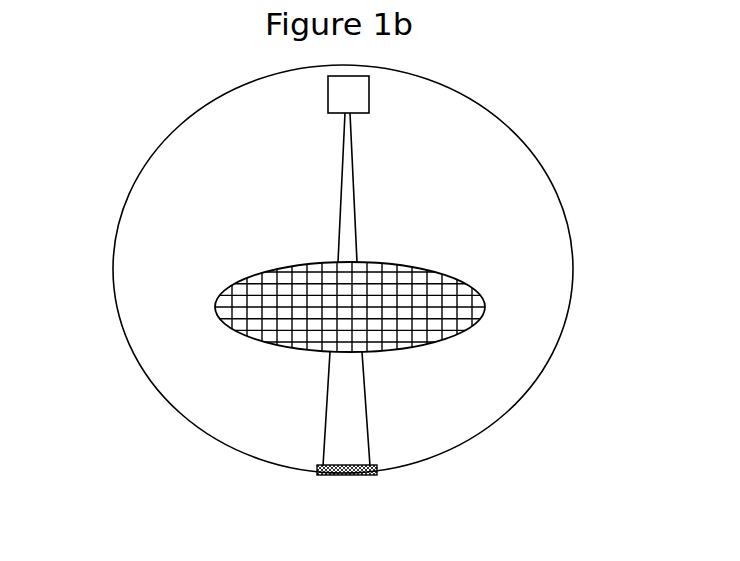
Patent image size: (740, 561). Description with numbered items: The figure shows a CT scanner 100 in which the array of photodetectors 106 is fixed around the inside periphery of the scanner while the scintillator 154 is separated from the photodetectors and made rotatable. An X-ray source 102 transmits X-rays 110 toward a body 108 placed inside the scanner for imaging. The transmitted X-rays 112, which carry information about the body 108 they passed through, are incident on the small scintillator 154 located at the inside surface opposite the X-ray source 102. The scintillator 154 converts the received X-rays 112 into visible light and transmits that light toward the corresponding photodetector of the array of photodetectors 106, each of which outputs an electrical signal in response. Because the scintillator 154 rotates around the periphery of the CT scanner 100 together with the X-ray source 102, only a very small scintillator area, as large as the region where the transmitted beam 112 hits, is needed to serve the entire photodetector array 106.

The CT scanner 100 is at (132, 105).
The X-ray source 102 is at (355, 89).
The array of photodetectors 106 is at (520, 143).
The body 108 is at (450, 305).
The X-rays 110 is at (352, 229).
The transmitted X-rays 112 is at (353, 415).
The scintillator 154 is at (378, 472).